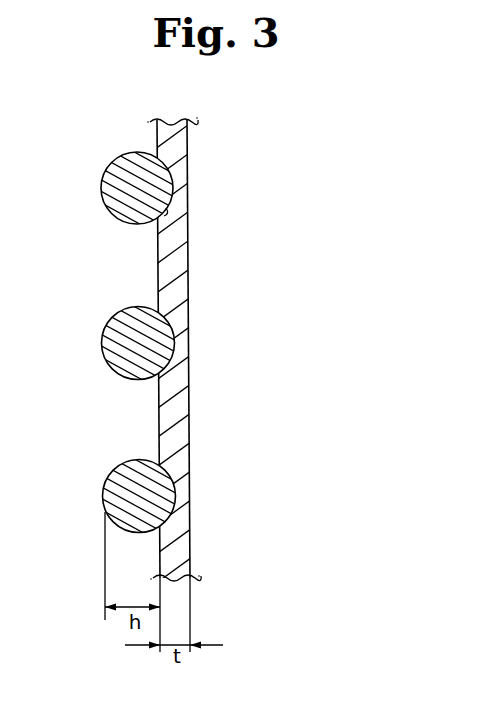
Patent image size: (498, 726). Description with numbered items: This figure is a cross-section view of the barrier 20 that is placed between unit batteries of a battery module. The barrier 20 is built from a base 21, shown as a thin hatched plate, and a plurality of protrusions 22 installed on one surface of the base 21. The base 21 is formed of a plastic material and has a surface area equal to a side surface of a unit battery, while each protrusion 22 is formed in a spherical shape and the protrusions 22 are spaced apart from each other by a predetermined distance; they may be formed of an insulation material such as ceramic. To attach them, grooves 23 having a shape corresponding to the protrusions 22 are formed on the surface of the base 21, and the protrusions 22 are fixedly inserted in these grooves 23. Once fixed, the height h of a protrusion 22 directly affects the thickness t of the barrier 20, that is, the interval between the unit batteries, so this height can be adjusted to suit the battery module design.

The barrier 20 is at (304, 146).
The base 21 is at (183, 305).
The protrusion 22 is at (102, 192).
The groove 23 is at (161, 210).